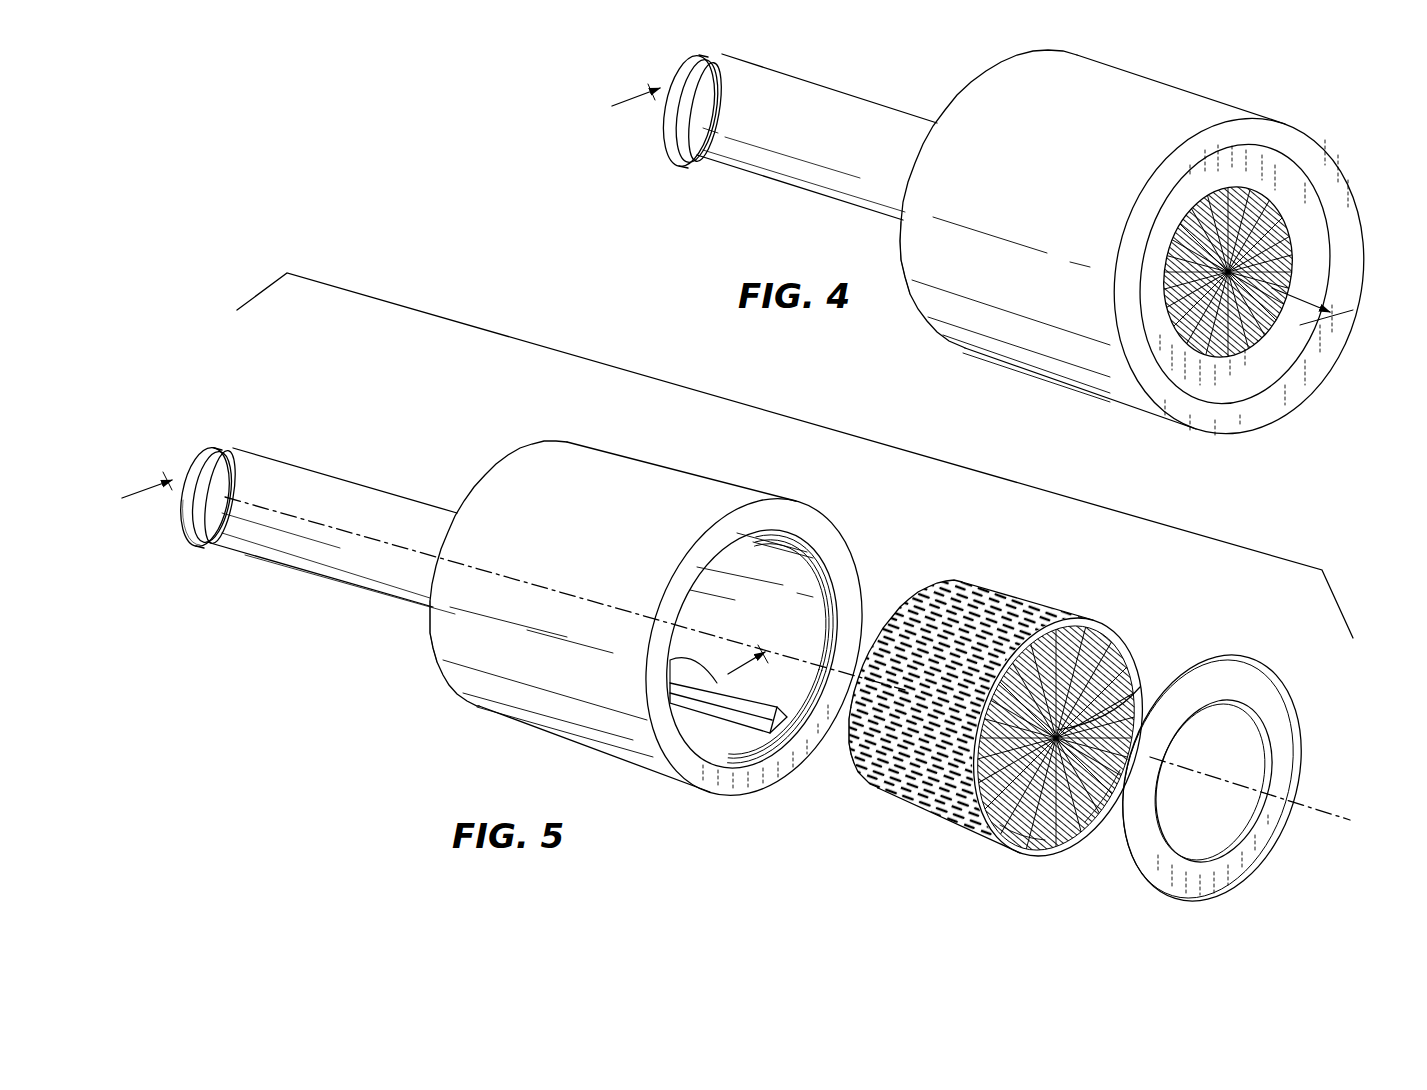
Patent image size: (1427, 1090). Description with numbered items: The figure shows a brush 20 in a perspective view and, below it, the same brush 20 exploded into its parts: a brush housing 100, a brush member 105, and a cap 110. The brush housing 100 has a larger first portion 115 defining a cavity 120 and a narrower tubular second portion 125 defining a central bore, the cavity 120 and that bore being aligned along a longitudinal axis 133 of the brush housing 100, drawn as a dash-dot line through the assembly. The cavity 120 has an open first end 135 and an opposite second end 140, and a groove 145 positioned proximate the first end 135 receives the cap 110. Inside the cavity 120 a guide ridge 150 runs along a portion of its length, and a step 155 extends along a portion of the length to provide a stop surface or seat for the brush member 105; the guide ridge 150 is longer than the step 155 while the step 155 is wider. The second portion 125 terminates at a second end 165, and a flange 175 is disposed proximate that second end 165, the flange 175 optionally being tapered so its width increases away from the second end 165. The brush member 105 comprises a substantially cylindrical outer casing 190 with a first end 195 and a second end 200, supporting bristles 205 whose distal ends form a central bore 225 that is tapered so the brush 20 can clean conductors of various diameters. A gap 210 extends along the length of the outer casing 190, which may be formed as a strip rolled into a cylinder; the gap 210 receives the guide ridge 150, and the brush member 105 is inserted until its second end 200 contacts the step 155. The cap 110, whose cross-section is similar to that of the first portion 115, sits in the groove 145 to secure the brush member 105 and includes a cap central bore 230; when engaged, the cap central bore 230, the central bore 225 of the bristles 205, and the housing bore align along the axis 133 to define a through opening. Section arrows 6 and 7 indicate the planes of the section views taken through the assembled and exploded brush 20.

In FIG. 5, the section line 6- 6 is at (453, 563).
In FIG. 4, the section line 7- 7 is at (971, 214).
In FIG. 4, the brush 20 is at (1170, 66).
In FIG. 5, the brush 20 is at (948, 518).
In FIG. 4, the brush housing 100 is at (945, 42).
In FIG. 5, the brush housing 100 is at (515, 420).
In FIG. 4, the brush member 105 is at (1255, 272).
In FIG. 5, the brush member 105 is at (1065, 585).
In FIG. 4, the cap 110 is at (1272, 200).
In FIG. 5, the cap 110 is at (1235, 672).
In FIG. 4, the first portion 115 is at (1205, 112).
In FIG. 5, the first portion 115 is at (523, 705).
In FIG. 5, the cavity 120 is at (785, 577).
In FIG. 4, the second portion 125 is at (772, 96).
In FIG. 5, the second portion 125 is at (340, 565).
In FIG. 5, the longitudinal axis 133 is at (587, 560).
In FIG. 4, the first end 135 is at (1150, 415).
In FIG. 5, the first end 135 is at (712, 790).
In FIG. 4, the second end 140 is at (922, 322).
In FIG. 5, the second end 140 is at (428, 650).
In FIG. 5, the groove 145 is at (848, 612).
In FIG. 5, the guide ridge 150 is at (765, 725).
In FIG. 5, the step 155 is at (700, 668).
In FIG. 5, the second end 165 is at (182, 522).
In FIG. 4, the flange 175 is at (690, 70).
In FIG. 5, the flange 175 is at (225, 452).
In FIG. 5, the outer casing 190 is at (960, 822).
In FIG. 5, the first end 195 is at (1025, 840).
In FIG. 5, the second end 200 is at (885, 790).
In FIG. 5, the bristles 205 is at (1068, 838).
In FIG. 5, the gap 210 is at (1095, 815).
In FIG. 5, the central bore 225 is at (1125, 682).
In FIG. 5, the cap central bore 230 is at (1228, 772).